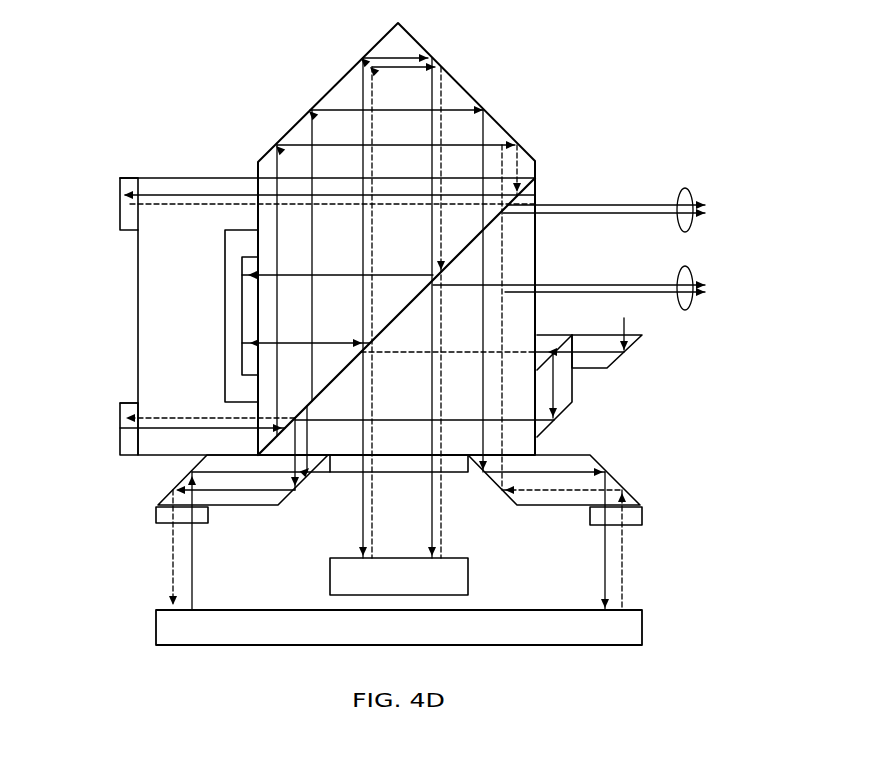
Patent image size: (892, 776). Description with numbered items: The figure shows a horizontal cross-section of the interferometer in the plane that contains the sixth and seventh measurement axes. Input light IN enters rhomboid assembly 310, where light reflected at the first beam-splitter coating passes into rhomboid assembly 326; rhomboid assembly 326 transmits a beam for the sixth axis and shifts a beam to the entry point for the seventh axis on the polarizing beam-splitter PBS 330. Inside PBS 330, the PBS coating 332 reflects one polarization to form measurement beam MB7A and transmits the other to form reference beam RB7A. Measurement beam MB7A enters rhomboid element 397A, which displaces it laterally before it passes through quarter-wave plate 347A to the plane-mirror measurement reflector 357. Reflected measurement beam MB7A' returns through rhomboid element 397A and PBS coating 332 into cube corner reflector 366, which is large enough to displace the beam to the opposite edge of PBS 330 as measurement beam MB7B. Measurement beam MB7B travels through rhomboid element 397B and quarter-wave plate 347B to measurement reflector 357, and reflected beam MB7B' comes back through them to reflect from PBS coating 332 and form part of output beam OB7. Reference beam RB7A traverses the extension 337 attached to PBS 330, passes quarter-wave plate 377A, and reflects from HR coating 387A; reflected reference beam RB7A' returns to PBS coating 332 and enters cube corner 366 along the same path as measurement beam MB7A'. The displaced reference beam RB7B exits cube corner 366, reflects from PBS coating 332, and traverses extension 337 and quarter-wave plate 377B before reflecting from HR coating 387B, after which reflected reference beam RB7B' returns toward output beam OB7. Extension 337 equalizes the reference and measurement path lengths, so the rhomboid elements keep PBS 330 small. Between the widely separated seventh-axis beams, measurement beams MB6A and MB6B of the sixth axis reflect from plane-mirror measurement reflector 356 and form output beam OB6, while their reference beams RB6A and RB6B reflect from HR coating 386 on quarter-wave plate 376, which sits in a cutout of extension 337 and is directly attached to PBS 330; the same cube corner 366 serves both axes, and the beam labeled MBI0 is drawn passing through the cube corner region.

The cube corner reflector 366 is at (327, 100).
The polarizing beam-splitter (PBS) 330 is at (396, 316).
The PBS coating 332 is at (402, 315).
The extension 337 is at (198, 342).
The HR coating 386 is at (235, 317).
The quarter-wave plate 376 is at (243, 360).
The quarter-wave plate 377A is at (132, 408).
The quarter-wave plate 377B is at (128, 182).
The HR coating 387A is at (120, 428).
The HR coating 387B is at (120, 205).
The quarter-wave plate 347A is at (155, 513).
The quarter-wave plate 347B is at (633, 515).
The rhomboid element 397A is at (260, 498).
The rhomboid element 397B is at (507, 502).
The measurement reflector 356 is at (347, 585).
The measurement reflector 357 is at (570, 617).
The rhomboid assembly 310 is at (587, 365).
The rhomboid assembly 326 is at (572, 387).
The input beam IN is at (634, 327).
The output beam OB6 is at (685, 310).
The output beam OB7 is at (685, 232).
The measurement beam MBI0 is at (457, 110).
The reference beam RB7B is at (329, 172).
The reflected reference beam RB7B' is at (332, 217).
The reference beam RB7A is at (166, 377).
The reflected reference beam RB7A' is at (186, 446).
The reference beam RB6A is at (283, 348).
The reference beam RB6B is at (343, 272).
The measurement beam MB7B is at (518, 481).
The reflected measurement beam MB7B' is at (533, 413).
The measurement beam MB7A is at (259, 541).
The reflected measurement beam MB7A' is at (193, 545).
The measurement beam MB6A is at (362, 513).
The measurement beam MB6B is at (463, 503).